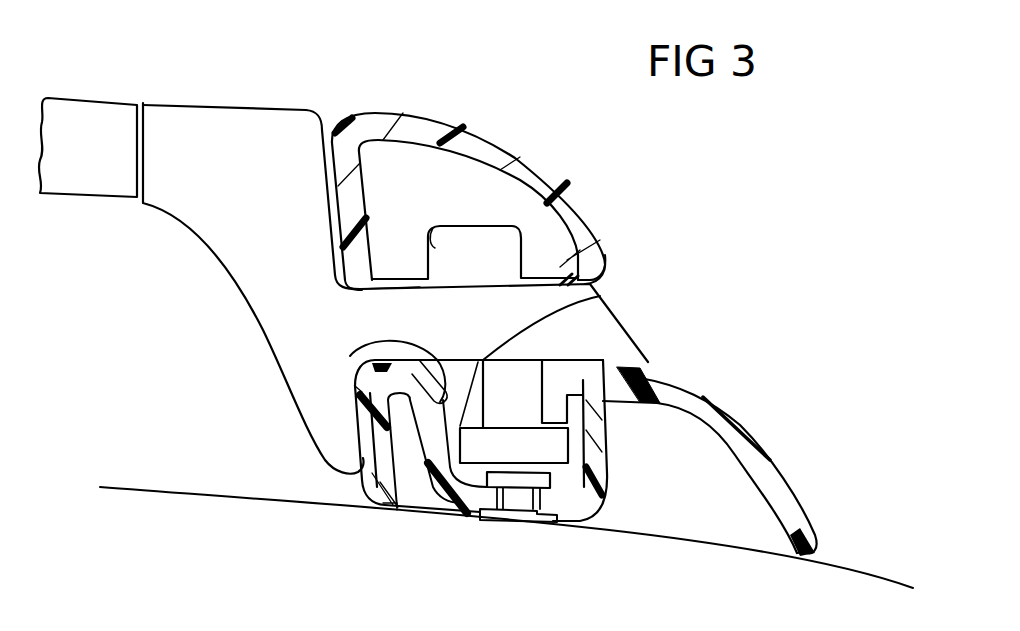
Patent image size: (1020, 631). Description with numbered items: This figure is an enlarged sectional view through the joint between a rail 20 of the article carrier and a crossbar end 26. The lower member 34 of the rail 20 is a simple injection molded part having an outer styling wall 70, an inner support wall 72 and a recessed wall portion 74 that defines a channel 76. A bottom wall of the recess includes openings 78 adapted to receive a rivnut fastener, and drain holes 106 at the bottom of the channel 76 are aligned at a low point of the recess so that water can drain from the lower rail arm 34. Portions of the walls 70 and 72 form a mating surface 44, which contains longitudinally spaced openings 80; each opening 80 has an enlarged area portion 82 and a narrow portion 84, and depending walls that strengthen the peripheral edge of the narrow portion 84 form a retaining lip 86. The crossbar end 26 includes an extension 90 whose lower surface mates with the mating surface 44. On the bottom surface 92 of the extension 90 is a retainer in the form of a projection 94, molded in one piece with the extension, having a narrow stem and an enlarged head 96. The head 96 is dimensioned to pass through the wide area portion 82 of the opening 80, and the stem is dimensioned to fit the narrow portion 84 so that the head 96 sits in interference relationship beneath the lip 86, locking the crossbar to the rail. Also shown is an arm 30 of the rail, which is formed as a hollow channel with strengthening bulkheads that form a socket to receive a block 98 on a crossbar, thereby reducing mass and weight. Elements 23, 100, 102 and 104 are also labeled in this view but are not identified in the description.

The rail 20 is at (818, 477).
The window pane 23 is at (85, 98).
The crossbar end 26 is at (279, 97).
The arm 30 is at (501, 136).
The lower member 34 is at (768, 434).
The mating surface 44 is at (670, 383).
The outer styling wall 70 is at (722, 400).
The inner support wall 72 is at (377, 500).
The recessed wall portion 74 is at (458, 506).
The channel 76 is at (572, 433).
The openings 78 is at (537, 505).
The opening 80 is at (566, 352).
The enlarged area portion 82 is at (350, 356).
The narrow portion 84 is at (600, 296).
The retaining lip 86 is at (580, 452).
The extension 90 is at (420, 311).
The bottom surface 92 is at (608, 361).
The projection 94 is at (483, 410).
The enlarged head 96 is at (467, 447).
The block 98 is at (521, 236).
The foot 100 is at (550, 267).
The lip 102 is at (436, 228).
The lower wall 104 is at (418, 304).
The drain holes 106 is at (578, 523).